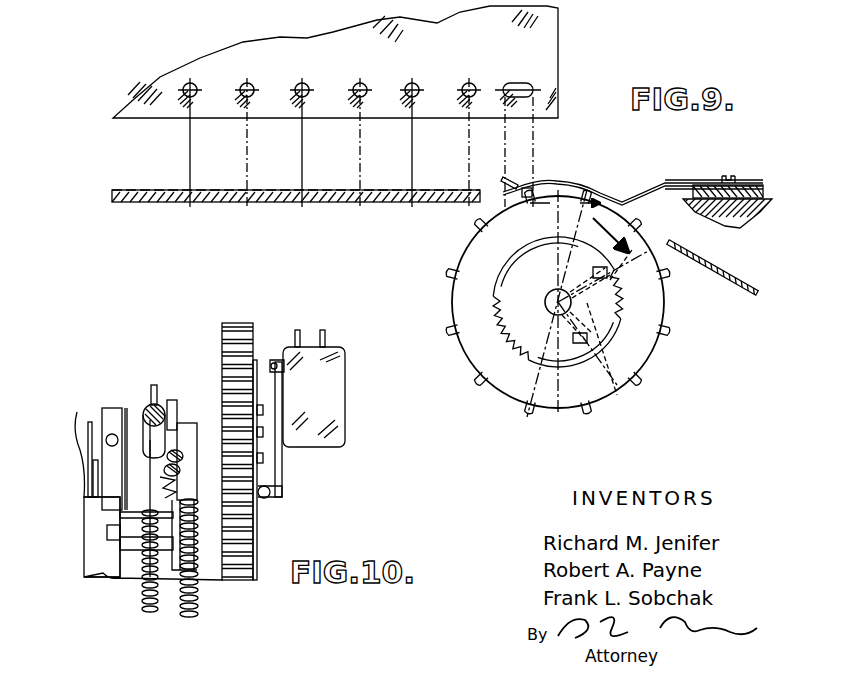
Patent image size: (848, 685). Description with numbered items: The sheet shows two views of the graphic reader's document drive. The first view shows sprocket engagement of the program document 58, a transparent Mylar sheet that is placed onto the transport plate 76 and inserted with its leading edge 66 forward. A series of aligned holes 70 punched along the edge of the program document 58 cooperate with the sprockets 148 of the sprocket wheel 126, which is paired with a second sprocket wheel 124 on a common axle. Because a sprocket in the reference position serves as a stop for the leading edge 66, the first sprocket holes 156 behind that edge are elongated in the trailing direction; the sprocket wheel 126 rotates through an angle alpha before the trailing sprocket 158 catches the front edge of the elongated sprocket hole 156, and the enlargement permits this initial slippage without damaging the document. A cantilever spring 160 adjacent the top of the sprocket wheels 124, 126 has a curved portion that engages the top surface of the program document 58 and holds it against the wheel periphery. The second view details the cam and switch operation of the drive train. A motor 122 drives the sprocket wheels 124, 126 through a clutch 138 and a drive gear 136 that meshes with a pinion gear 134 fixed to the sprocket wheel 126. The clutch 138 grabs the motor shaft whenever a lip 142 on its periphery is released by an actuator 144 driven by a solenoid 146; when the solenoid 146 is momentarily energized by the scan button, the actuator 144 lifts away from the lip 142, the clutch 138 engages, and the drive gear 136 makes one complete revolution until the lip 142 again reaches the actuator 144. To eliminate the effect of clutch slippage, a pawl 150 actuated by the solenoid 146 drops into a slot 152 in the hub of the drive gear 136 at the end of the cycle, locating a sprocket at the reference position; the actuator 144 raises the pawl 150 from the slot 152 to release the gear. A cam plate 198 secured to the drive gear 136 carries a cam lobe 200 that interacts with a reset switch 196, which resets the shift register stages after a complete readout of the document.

In FIG. 9, the program document 58 is at (171, 190).
In FIG. 9, the leading edge 66 is at (558, 74).
In FIG. 9, the aligned holes 70 is at (407, 84).
In FIG. 9, the transport plate 76 is at (218, 202).
In FIG. 10, the motor 122 is at (75, 411).
In FIG. 9, the sprocket wheel 124 is at (733, 222).
In FIG. 9, the sprocket wheel 126 is at (467, 246).
In FIG. 9, the pinion gear 134 is at (497, 318).
In FIG. 10, the drive gear 136 is at (251, 328).
In FIG. 10, the clutch 138 is at (126, 408).
In FIG. 10, the lip 142 is at (171, 402).
In FIG. 10, the actuator 144 is at (153, 385).
In FIG. 10, the solenoid 146 is at (143, 400).
In FIG. 9, the sprockets 148 is at (603, 193).
In FIG. 10, the pawl 150 is at (213, 391).
In FIG. 10, the slot 152 is at (189, 525).
In FIG. 9, the sprocket holes 156 is at (504, 90).
In FIG. 9, the sprocket 158 is at (523, 197).
In FIG. 9, the cantilever spring 160 is at (683, 155).
In FIG. 10, the reset switch 196 is at (345, 392).
In FIG. 10, the cam plate 198 is at (258, 362).
In FIG. 10, the cam lobe 200 is at (261, 500).